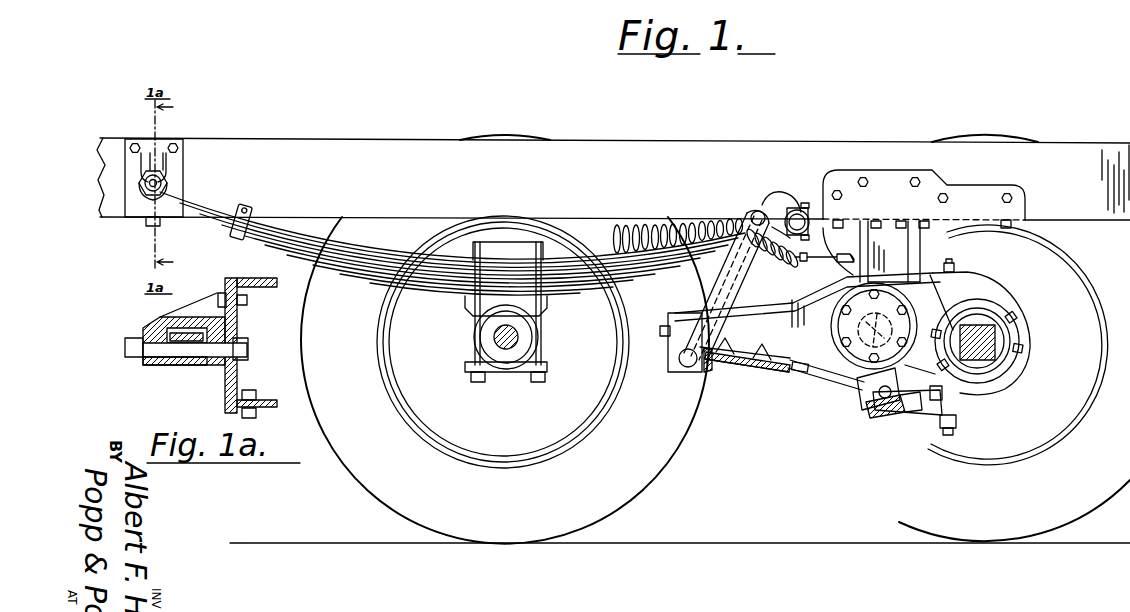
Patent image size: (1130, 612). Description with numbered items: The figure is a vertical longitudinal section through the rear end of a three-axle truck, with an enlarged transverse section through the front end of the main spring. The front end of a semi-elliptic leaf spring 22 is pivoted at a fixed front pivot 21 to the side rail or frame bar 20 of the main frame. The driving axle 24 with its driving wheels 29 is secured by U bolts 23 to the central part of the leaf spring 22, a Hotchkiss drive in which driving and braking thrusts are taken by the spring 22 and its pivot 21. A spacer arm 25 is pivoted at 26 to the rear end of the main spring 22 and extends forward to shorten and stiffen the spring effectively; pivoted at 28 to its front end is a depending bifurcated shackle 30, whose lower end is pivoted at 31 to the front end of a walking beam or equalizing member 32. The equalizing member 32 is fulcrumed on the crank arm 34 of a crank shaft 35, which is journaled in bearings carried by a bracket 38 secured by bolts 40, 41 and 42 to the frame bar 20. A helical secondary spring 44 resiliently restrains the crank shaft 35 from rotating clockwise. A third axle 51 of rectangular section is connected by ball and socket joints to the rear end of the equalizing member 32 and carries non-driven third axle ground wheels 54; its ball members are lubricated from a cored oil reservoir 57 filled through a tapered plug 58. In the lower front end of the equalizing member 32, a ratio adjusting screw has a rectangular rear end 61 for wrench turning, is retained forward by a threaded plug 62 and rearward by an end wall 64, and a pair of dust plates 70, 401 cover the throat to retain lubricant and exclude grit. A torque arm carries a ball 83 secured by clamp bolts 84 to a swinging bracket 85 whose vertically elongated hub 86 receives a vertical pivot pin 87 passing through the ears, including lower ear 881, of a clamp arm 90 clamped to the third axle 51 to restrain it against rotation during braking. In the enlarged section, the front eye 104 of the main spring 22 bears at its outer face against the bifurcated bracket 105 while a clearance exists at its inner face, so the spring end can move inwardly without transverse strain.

In FIG. 1, the side rail or frame bar 20 is at (356, 137).
In FIG. 1A, the side rail or frame bar 20 is at (262, 289).
In FIG. 1, the front pivot 21 is at (146, 186).
In FIG. 1A, the front pivot 21 is at (125, 347).
In FIG. 1, the semi-elliptic leaf spring 22 is at (268, 252).
In FIG. 1A, the semi-elliptic leaf spring 22 is at (173, 366).
In FIG. 1, the U bolts 23 is at (472, 327).
In FIG. 1, the driving axle 24 is at (514, 344).
In FIG. 1, the spacer arm 25 is at (779, 191).
In FIG. 1, the rear spring eye pivot 26 is at (806, 206).
In FIG. 1, the shackle pivot 28 is at (746, 210).
In FIG. 1, the driving wheels 29 is at (590, 510).
In FIG. 1, the link or shackle 30 is at (734, 292).
In FIG. 1, the lower shackle pivot 31 is at (680, 366).
In FIG. 1, the walking beam or equalizing lever 32 is at (828, 367).
In FIG. 1, the crank arm 34 is at (832, 333).
In FIG. 1, the crank shaft 35 is at (910, 325).
In FIG. 1, the bracket 38 is at (918, 247).
In FIG. 1, the bolts 40 is at (913, 180).
In FIG. 1, the bolts 41 is at (840, 228).
In FIG. 1, the bolts 42 is at (880, 236).
In FIG. 1, the helical secondary spring 44 is at (641, 224).
In FIG. 1, the third axle 51 is at (980, 345).
In FIG. 1, the third axle ground wheels 54 is at (1058, 514).
In FIG. 1, the cored oil reservoir 57 is at (988, 282).
In FIG. 1, the tapered plug or filling cap 58 is at (950, 266).
In FIG. 1, the rear end of ratio adjusting screw 61 is at (793, 364).
In FIG. 1, the externally threaded plug or head 62 is at (664, 327).
In FIG. 1, the end wall 64 is at (708, 364).
In FIG. 1, the dust plate 70 is at (735, 365).
In FIG. 1, the ball 83 is at (866, 390).
In FIG. 1, the clamp bolts 84 is at (885, 407).
In FIG. 1, the swinging bracket 85 is at (917, 393).
In FIG. 1, the vertically elongated hub 86 is at (937, 390).
In FIG. 1, the vertical pivot pin 87 is at (947, 424).
In FIG. 1, the clamp arm 90 is at (950, 397).
In FIG. 1, the front eye 104 is at (143, 203).
In FIG. 1A, the front eye 104 is at (183, 366).
In FIG. 1, the bifurcated bracket 105 is at (165, 165).
In FIG. 1A, the bifurcated bracket 105 is at (160, 318).
In FIG. 1, the friction plate 401 is at (762, 367).
In FIG. 1, the lower ear 881 is at (953, 408).